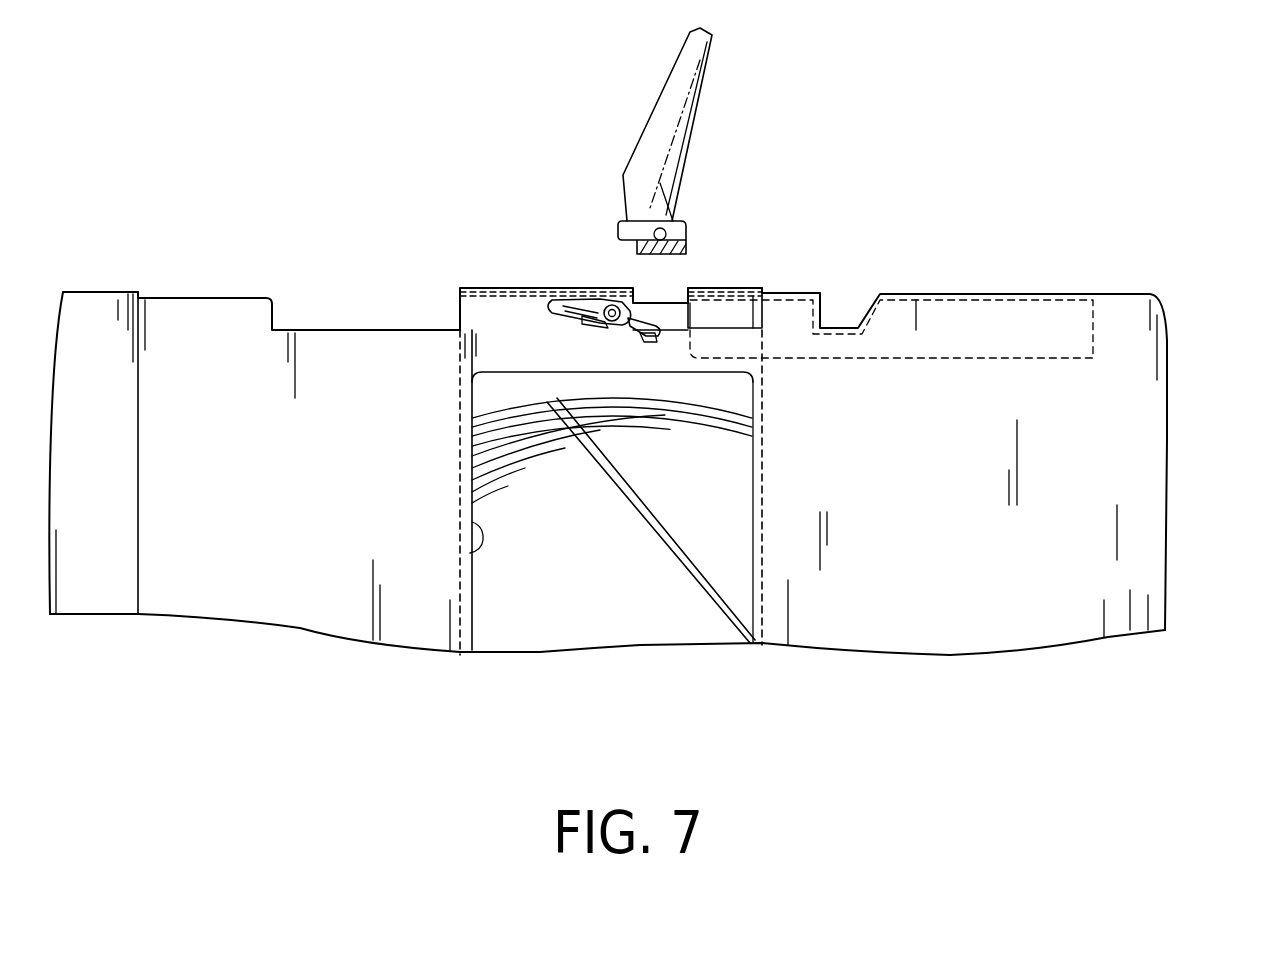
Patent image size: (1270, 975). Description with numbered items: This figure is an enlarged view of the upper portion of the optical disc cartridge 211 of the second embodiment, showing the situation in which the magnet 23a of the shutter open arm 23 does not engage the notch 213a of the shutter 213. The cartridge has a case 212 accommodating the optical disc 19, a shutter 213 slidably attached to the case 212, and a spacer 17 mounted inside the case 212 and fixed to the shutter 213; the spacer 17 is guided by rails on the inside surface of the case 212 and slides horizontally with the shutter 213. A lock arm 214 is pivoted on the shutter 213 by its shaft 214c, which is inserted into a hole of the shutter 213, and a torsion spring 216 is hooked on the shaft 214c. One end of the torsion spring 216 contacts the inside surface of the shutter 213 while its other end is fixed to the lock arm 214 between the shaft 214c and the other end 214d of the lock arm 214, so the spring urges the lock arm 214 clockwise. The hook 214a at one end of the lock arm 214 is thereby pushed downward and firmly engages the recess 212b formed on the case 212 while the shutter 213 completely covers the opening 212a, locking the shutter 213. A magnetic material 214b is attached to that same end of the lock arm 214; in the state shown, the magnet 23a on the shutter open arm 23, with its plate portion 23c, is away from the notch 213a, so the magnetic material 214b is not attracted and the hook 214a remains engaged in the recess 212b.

The spacer 17 is at (973, 310).
The optical disc 19 is at (607, 597).
The shutter open arm 23 is at (634, 150).
The magnet 23a is at (720, 213).
The arm plate 23c is at (675, 117).
The optical disc cartridge 211 is at (1053, 280).
The case 212 is at (1140, 492).
The opening 212a is at (483, 535).
The recess 212b is at (650, 342).
The shutter 213 is at (740, 290).
The notch 213a is at (690, 312).
The lock arm 214 is at (555, 304).
The hook 214a is at (655, 336).
The magnetic material 214b is at (637, 333).
The shaft 214c is at (606, 304).
The other end of the lock arm 214d is at (562, 307).
The torsion spring 216 is at (587, 318).